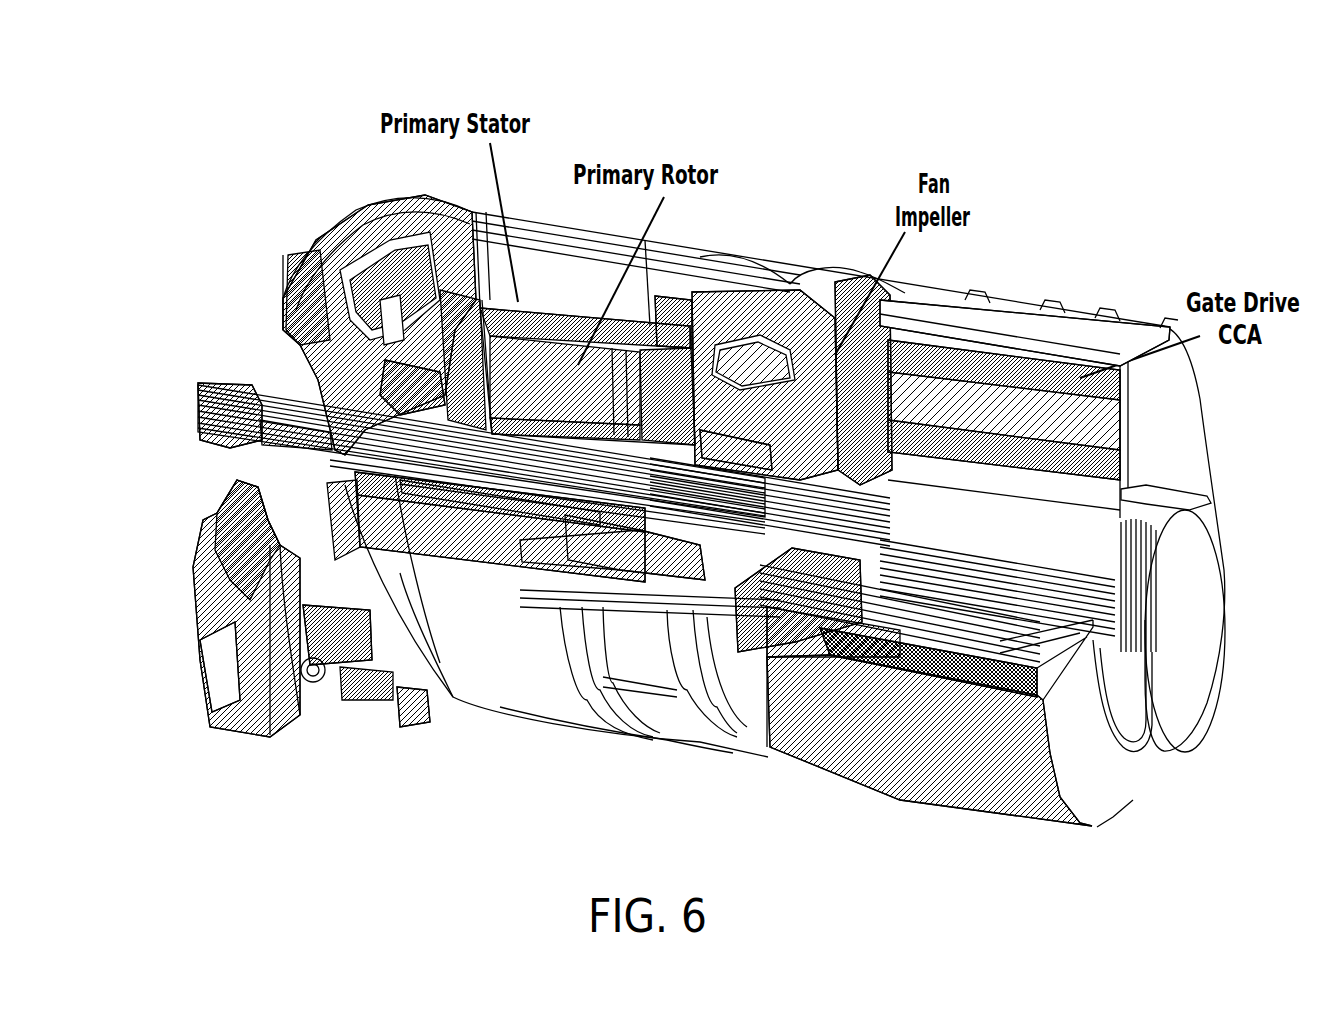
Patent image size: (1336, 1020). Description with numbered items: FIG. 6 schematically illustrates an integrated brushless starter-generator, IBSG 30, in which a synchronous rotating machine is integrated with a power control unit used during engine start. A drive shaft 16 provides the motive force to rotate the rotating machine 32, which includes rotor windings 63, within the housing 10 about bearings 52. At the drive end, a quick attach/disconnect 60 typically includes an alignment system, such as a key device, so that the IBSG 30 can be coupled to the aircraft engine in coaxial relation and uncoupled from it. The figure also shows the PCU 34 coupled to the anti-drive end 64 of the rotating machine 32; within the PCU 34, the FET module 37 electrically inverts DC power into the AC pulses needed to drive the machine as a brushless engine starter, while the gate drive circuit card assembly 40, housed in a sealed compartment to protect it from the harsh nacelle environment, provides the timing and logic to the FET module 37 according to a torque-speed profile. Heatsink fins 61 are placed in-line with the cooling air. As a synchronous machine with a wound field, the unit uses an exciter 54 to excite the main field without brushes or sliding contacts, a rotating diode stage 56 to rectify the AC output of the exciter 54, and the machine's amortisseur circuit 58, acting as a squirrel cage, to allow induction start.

The IBSG 30 is at (216, 136).
The housing 10 is at (322, 240).
The quick attach/disconnect 60 is at (363, 200).
The bearings 52 is at (405, 382).
The drive shaft 16 is at (203, 440).
The amortisseur circuit 58 is at (608, 335).
The FET module 37 is at (990, 420).
The rotor windings 63 is at (497, 548).
The rotating machine 32 is at (440, 660).
The exciter 54 is at (665, 572).
The rotating diode stage 56 is at (735, 450).
The anti-drive end 64 is at (795, 570).
The heatsink fins 61 is at (937, 592).
The circuit card assembly 40 is at (1000, 683).
The power control unit 34 is at (913, 796).